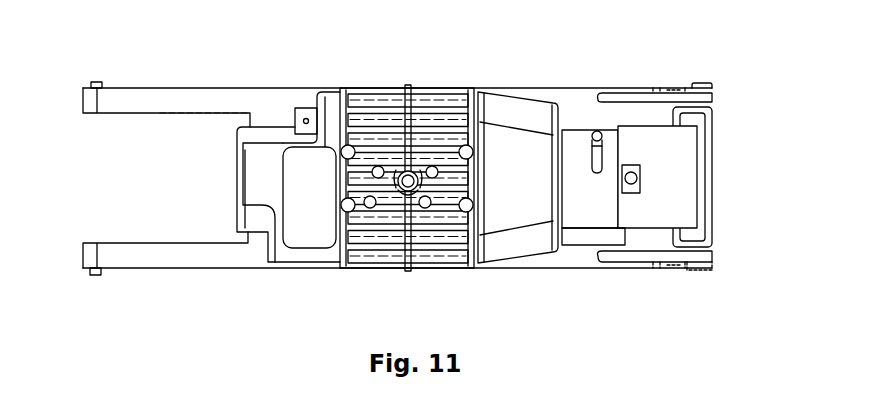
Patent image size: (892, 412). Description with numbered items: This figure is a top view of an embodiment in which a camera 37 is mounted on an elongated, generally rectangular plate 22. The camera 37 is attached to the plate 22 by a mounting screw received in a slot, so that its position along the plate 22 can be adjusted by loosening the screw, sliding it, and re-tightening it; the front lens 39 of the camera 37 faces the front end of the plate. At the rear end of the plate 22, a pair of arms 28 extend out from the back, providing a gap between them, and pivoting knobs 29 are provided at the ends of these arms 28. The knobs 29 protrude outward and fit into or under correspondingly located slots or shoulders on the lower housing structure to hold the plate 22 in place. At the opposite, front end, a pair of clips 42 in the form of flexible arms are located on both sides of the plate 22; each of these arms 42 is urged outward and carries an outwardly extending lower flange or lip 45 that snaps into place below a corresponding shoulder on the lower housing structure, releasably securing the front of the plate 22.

The plate 22 is at (280, 108).
The arms 28 is at (167, 103).
The knobs 29 is at (104, 82).
The camera 37 is at (512, 148).
The front lens 39 is at (713, 177).
The clips 42 is at (645, 92).
The lower flange or lip 45 is at (704, 85).